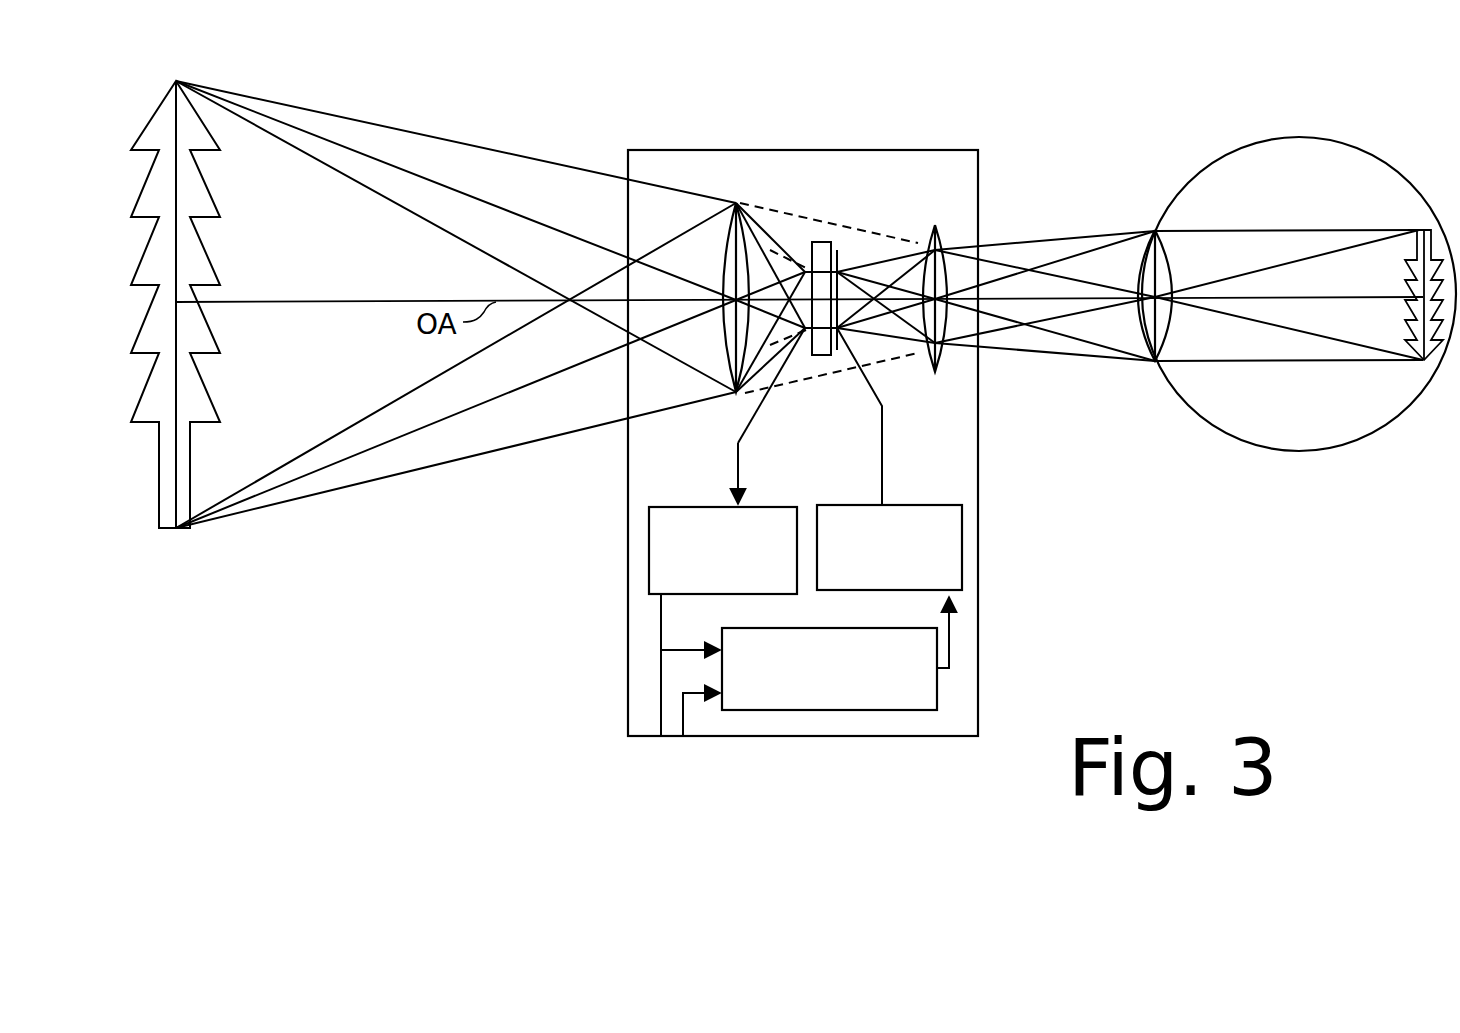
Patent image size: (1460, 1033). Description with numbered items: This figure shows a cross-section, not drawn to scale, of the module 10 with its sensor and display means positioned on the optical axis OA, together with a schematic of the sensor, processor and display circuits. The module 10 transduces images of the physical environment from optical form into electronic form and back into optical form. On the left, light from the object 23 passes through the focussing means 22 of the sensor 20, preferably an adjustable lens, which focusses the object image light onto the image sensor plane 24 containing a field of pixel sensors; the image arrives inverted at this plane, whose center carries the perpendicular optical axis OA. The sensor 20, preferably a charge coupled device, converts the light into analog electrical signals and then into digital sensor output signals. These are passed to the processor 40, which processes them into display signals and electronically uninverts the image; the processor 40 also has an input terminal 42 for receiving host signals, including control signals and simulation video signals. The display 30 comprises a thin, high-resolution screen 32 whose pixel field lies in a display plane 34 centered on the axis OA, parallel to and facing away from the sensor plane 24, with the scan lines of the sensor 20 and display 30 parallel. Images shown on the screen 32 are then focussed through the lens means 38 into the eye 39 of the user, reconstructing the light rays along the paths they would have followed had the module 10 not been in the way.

The module 10 is at (982, 190).
The video sensor means 20 is at (723, 550).
The focussing means 22 is at (714, 395).
The object 23 is at (162, 504).
The image sensor plane 24 is at (812, 356).
The video display means 30 is at (889, 547).
The screen 32 is at (836, 330).
The display plane 34 is at (841, 334).
The focussing (lens) means 38 is at (973, 345).
The eye 39 is at (1297, 294).
The processor means 40 is at (829, 669).
The input terminal 42 is at (683, 736).